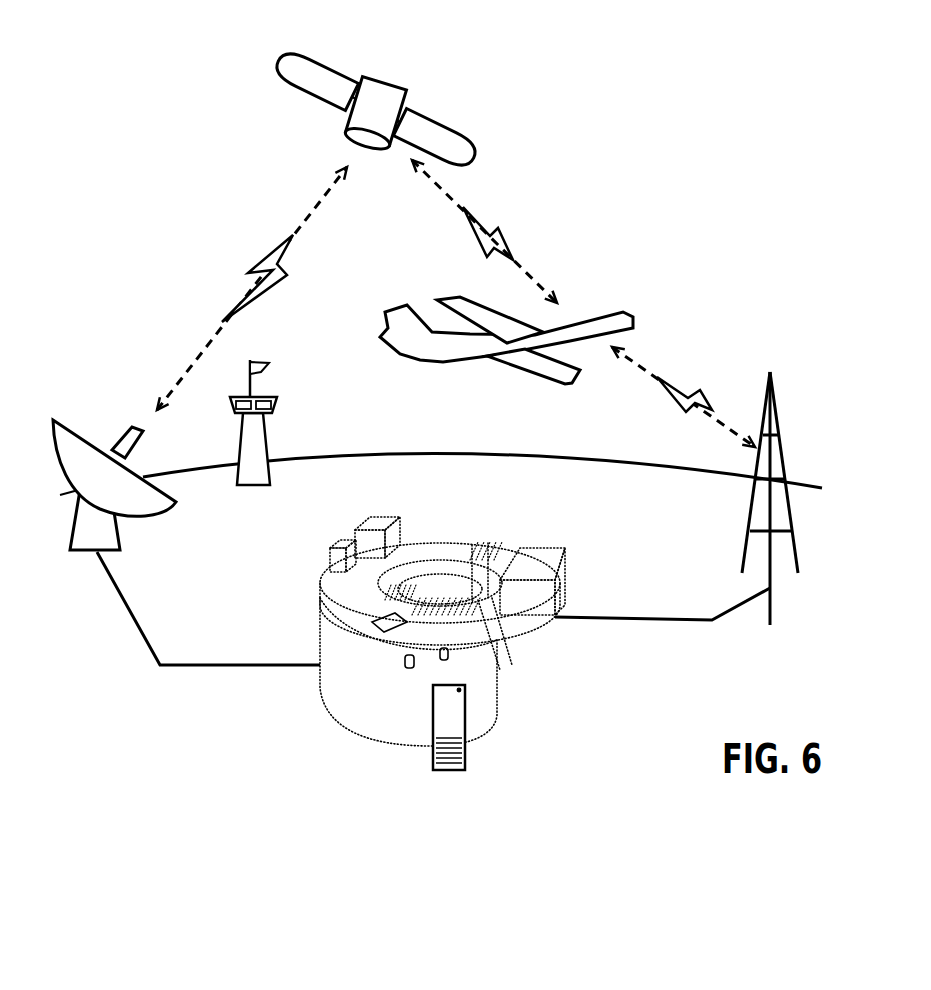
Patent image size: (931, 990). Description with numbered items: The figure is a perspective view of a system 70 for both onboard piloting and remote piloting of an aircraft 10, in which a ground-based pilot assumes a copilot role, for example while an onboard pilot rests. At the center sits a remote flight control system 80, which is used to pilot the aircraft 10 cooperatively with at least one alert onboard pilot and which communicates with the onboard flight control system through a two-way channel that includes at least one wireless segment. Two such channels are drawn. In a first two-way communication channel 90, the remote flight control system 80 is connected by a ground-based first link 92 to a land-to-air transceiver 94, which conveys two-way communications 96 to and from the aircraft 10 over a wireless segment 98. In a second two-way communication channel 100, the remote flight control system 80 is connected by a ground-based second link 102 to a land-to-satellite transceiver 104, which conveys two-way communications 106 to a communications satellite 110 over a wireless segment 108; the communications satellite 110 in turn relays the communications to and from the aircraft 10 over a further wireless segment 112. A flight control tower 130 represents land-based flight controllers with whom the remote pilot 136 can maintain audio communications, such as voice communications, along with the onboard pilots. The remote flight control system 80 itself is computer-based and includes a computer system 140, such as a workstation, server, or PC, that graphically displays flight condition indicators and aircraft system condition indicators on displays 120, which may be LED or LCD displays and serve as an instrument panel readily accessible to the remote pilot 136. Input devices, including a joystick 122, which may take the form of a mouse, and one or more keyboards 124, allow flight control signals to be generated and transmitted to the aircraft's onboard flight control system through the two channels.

The system 70 is at (698, 110).
The communications satellite 110 is at (370, 78).
The wireless segment 108 is at (310, 210).
The two-way communications 106 is at (258, 258).
The wireless segment 112 is at (452, 193).
The aircraft 10 is at (615, 305).
The wireless segment 98 is at (637, 360).
The two-way communications 96 is at (698, 395).
The land-to-air transceiver 94 is at (750, 517).
The flight control tower 130 is at (278, 400).
The land-to-satellite transceiver 104 is at (160, 517).
The ground-based second link 102 is at (227, 667).
The ground-based first link 92 is at (677, 621).
The second two-way communication channel 100 is at (301, 722).
The first two-way communication channel 90 is at (585, 730).
The remote flight control system 80 is at (400, 662).
The displays 120 is at (362, 527).
The keyboards 124 is at (400, 580).
The joystick 122 is at (447, 580).
The remote pilot 136 is at (487, 558).
The computer system 140 is at (433, 699).